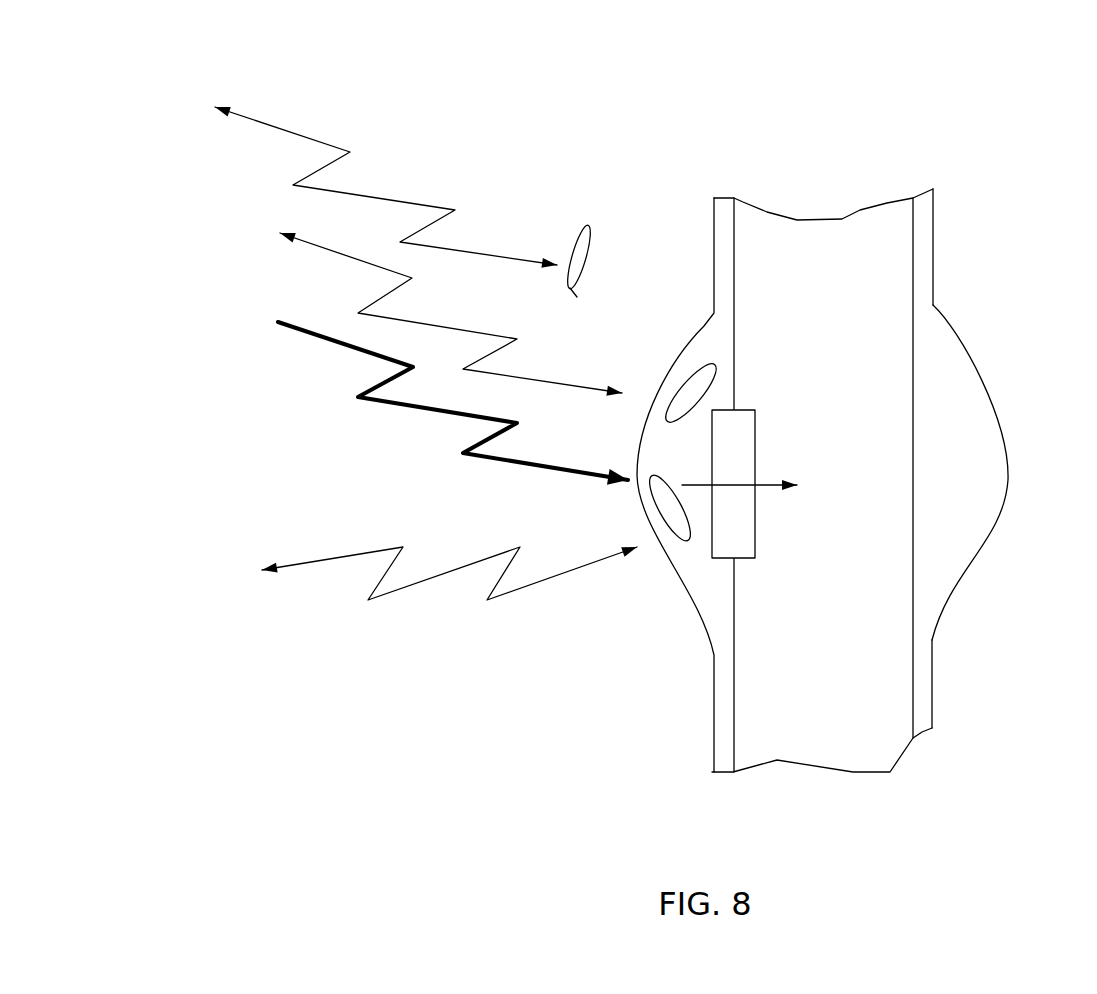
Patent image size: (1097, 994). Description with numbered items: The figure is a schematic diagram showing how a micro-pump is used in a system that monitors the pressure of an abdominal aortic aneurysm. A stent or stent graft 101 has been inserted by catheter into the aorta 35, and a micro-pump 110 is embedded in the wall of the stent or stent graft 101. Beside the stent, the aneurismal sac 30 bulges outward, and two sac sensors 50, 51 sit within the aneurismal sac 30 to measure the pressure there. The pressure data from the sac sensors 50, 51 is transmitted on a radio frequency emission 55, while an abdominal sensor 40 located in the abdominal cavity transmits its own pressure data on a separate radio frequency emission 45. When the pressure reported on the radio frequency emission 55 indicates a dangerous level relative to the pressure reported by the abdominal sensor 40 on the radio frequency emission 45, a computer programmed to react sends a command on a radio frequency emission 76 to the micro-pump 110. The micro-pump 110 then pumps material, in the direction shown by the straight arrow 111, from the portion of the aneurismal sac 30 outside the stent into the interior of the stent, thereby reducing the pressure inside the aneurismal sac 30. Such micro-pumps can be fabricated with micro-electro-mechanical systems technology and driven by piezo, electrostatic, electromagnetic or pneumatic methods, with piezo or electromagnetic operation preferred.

The aneurismal sac 30 is at (1012, 485).
The aorta 35 is at (935, 230).
The abdominal sensor 40 is at (575, 238).
The radio frequency emission 45 is at (313, 130).
The sac sensor 50 is at (675, 388).
The sac sensor 51 is at (663, 545).
The radio frequency emission 55 is at (302, 240).
The radio frequency emission 76 is at (312, 338).
The stent or stent graft 101 is at (775, 250).
The micro-pump 110 is at (723, 560).
The straight arrow 111 is at (772, 488).